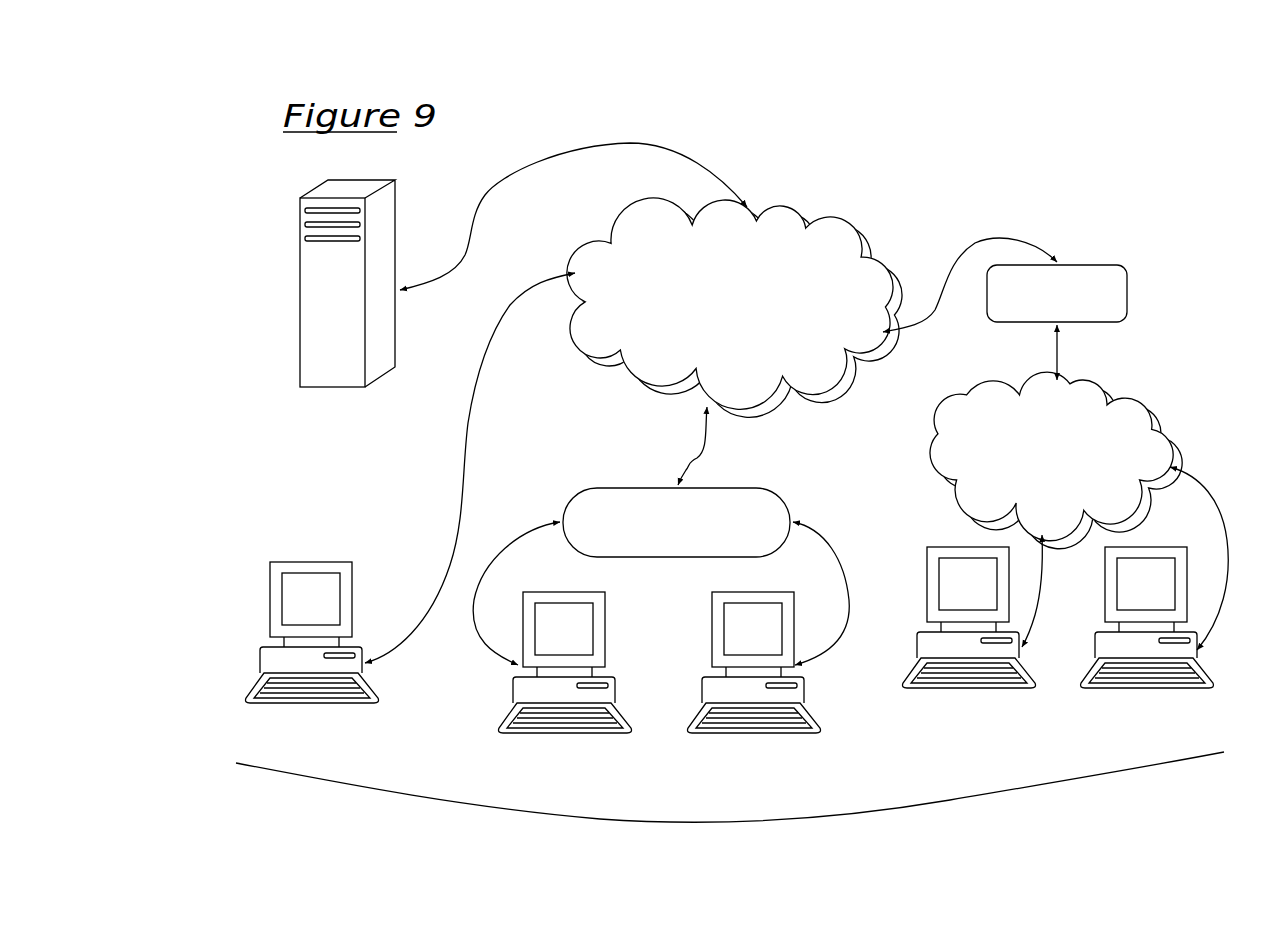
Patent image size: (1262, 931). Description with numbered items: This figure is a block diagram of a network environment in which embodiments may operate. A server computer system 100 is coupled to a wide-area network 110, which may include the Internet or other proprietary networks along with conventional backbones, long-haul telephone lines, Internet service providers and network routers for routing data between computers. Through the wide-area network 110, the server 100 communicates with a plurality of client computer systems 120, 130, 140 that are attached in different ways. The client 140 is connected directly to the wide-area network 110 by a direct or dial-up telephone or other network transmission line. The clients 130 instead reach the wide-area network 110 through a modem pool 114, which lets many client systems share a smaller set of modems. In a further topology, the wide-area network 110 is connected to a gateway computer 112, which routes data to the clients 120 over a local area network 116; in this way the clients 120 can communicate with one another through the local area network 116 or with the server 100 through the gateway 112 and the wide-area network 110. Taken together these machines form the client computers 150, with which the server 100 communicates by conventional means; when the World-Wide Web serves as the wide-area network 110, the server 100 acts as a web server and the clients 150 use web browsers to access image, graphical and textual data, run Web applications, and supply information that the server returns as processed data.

The server computer system 100 is at (300, 208).
The wide-area network 110 is at (797, 210).
The gateway computer 112 is at (1097, 260).
The modem pool 114 is at (645, 483).
The local area network 116 is at (1118, 393).
The client computer systems 120 is at (953, 545).
The client computer systems 130 is at (513, 690).
The client computer system 140 is at (307, 555).
The client computers 150 is at (730, 814).